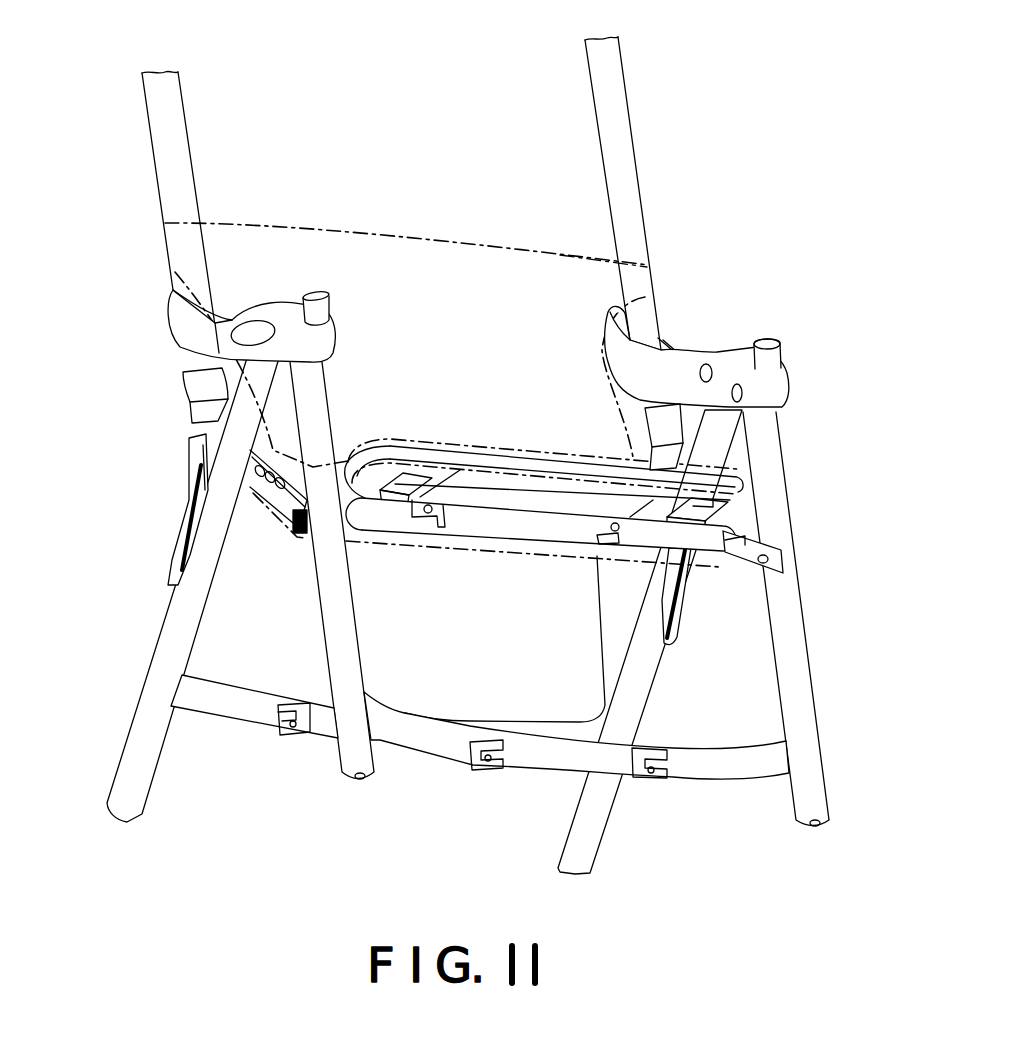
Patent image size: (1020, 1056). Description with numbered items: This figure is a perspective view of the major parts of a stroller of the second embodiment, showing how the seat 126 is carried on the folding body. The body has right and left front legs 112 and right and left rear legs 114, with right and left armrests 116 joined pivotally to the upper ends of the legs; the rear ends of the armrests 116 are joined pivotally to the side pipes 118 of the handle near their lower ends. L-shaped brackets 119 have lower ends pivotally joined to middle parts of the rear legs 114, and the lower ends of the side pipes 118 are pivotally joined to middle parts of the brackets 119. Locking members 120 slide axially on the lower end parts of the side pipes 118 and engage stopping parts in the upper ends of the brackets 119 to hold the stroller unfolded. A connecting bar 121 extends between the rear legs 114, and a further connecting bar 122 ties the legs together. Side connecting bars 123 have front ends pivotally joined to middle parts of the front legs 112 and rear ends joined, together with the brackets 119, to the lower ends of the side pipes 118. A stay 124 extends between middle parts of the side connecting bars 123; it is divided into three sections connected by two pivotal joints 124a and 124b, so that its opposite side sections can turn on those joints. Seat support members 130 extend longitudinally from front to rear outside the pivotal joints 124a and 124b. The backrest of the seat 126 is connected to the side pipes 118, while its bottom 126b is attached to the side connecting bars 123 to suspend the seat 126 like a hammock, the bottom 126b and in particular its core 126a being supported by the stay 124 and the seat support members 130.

The front leg 112 is at (332, 623).
The rear leg 114 is at (160, 656).
The armrest 116 is at (270, 303).
The side pipe 118 is at (175, 147).
The L-shaped bracket 119 is at (187, 495).
The locking member 120 is at (198, 387).
The connecting bar 121 is at (545, 760).
The connecting bar 122 is at (237, 713).
The side connecting bar 123 is at (277, 480).
The stay 124 is at (522, 527).
The pivotal joint 124a is at (425, 518).
The pivotal joint 124b is at (612, 535).
The seat 126 is at (466, 258).
The core 126a is at (474, 458).
The bottom 126b is at (527, 457).
The seat support member 130 is at (398, 478).